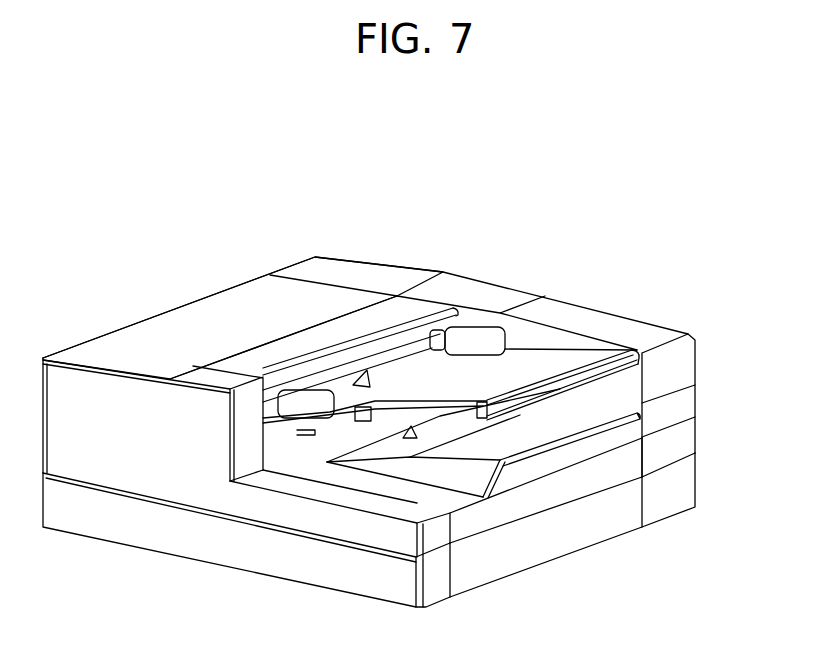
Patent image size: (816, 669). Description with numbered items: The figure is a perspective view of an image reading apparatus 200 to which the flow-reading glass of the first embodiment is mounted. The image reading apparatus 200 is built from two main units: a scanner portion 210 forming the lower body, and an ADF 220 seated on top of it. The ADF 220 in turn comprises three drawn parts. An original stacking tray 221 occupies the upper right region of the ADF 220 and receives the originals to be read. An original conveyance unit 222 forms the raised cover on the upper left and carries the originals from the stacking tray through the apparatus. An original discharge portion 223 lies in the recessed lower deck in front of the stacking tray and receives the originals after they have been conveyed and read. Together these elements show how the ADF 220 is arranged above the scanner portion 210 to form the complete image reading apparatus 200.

The image reading apparatus 200 is at (527, 228).
The scanner portion 210 is at (699, 473).
The ADF 220 is at (400, 263).
The original stacking tray 221 is at (535, 360).
The original conveyance unit 222 is at (213, 315).
The original discharge portion 223 is at (567, 421).